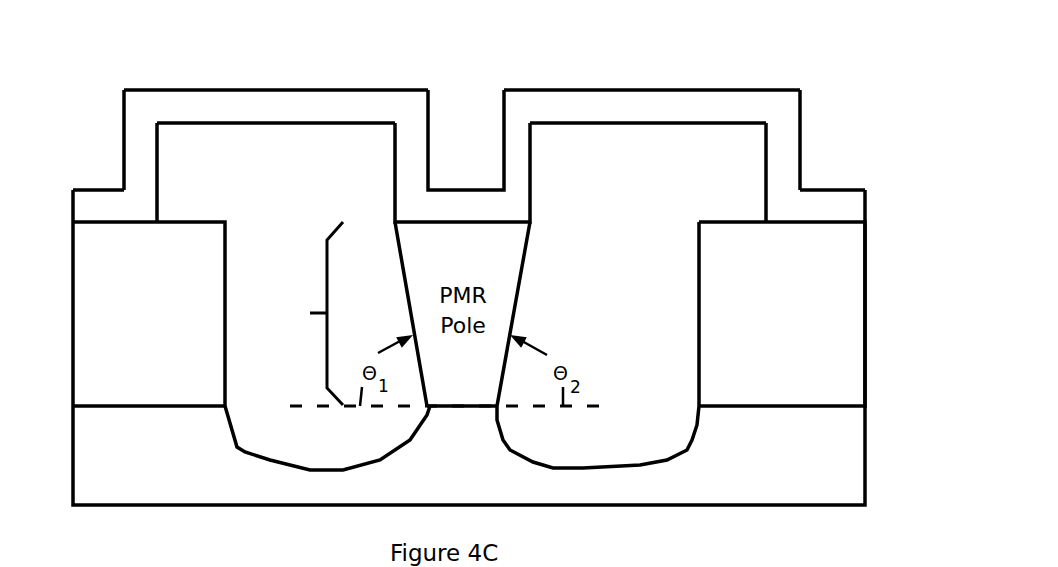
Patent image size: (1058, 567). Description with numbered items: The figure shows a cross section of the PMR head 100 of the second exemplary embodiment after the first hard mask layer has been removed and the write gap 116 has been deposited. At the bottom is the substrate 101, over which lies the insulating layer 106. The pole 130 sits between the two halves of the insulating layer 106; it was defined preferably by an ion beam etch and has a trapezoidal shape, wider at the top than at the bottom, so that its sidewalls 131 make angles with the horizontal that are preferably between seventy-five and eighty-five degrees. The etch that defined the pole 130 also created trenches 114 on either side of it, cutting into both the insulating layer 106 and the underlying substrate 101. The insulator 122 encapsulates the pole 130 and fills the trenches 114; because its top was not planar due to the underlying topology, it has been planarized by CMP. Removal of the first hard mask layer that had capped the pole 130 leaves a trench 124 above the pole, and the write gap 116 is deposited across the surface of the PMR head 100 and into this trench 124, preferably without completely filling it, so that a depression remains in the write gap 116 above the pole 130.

The PMR head 100 is at (472, 35).
The substrate 101 is at (73, 472).
The insulating layer 106 is at (73, 372).
The trenches 114 is at (305, 224).
The write gap 116 is at (396, 89).
The insulator 122 is at (310, 122).
The trench 124 is at (462, 92).
The pole 130 is at (310, 313).
The pole sidewall 131 is at (413, 315).